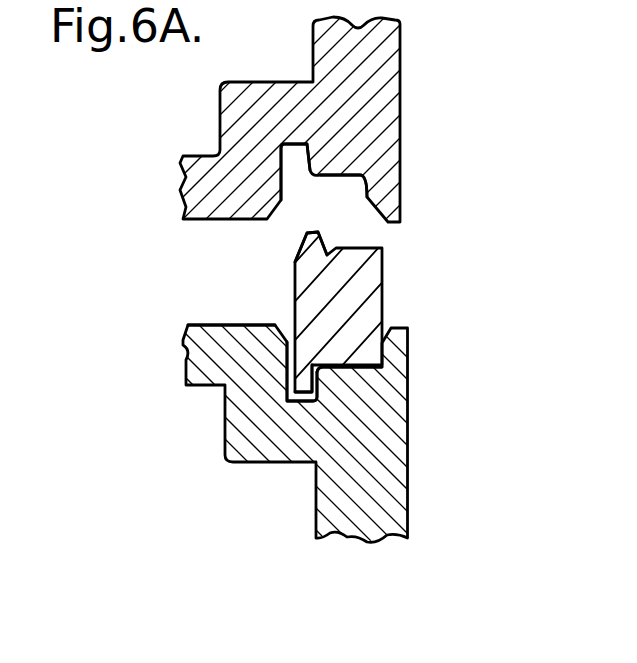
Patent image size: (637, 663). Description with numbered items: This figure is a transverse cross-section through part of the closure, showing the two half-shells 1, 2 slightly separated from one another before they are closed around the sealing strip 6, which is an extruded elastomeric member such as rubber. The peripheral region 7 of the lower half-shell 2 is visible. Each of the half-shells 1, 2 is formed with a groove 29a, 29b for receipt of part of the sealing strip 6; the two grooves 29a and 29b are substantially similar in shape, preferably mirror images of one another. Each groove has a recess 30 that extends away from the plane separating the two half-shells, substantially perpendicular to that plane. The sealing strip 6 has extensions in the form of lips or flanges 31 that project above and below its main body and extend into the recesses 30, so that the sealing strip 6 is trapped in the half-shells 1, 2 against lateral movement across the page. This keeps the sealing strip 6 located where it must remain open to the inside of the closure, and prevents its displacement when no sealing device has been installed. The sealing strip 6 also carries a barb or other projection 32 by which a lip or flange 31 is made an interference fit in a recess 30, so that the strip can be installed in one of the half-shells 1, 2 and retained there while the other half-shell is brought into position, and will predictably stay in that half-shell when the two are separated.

The half-shell 1 is at (261, 81).
The lower half-shell 2 is at (268, 463).
The sealing strip 6 is at (368, 288).
The peripheral region 7 is at (215, 325).
The groove 29a is at (352, 190).
The groove 29b is at (365, 370).
The recess 30 is at (293, 162).
The lip or flange 31 is at (304, 237).
The barb or other projection 32 is at (301, 362).